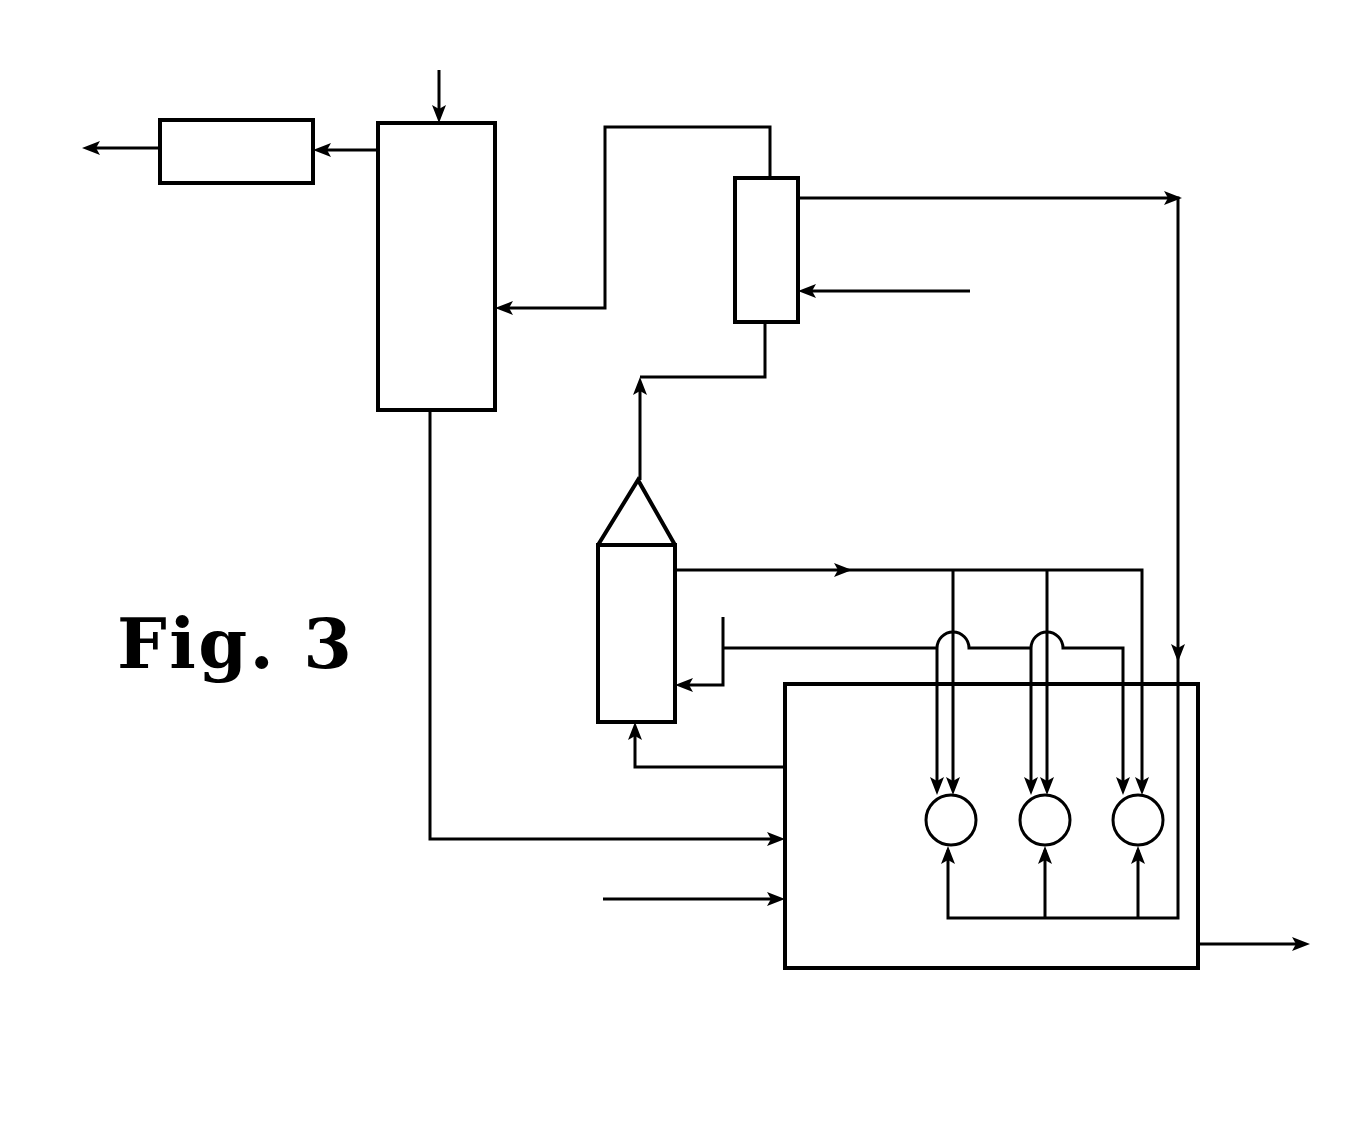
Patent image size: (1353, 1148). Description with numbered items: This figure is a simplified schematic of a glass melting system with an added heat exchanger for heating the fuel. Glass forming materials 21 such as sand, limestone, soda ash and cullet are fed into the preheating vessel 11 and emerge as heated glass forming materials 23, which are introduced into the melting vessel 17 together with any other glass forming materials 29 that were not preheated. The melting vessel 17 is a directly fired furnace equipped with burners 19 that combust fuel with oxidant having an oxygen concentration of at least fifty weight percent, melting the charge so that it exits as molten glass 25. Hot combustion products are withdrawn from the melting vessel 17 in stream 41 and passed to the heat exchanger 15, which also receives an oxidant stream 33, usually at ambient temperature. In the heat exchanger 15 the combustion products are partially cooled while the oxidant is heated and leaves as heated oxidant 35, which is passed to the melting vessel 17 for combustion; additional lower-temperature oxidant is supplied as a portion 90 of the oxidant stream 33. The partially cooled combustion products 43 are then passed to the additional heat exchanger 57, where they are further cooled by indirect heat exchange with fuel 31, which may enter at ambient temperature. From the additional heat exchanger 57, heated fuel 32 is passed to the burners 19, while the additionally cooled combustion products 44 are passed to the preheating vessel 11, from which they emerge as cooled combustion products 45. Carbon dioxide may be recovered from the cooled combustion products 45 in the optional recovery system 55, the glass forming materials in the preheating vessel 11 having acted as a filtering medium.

The preheating vessel 11 is at (495, 215).
The heat exchanger 15 is at (598, 602).
The melting vessel 17 is at (1198, 744).
The burners 19 is at (1067, 805).
The glass forming materials 21 is at (441, 85).
The heated glass forming materials 23 is at (543, 839).
The molten glass 25 is at (1221, 944).
The other glass forming materials 29 is at (722, 899).
The fuel 31 is at (888, 291).
The heated fuel 32 is at (1178, 633).
The oxidant stream 33 is at (723, 633).
The heated oxidant 35 is at (793, 568).
The hot combustion products stream 41 is at (633, 752).
The partially cooled combustion products 43 is at (710, 377).
The additionally cooled combustion products 44 is at (697, 126).
The cooled combustion products 45 is at (350, 147).
The recovery system 55 is at (245, 183).
The additional heat exchanger 57 is at (798, 245).
The portion of oxidant stream 90 is at (897, 647).